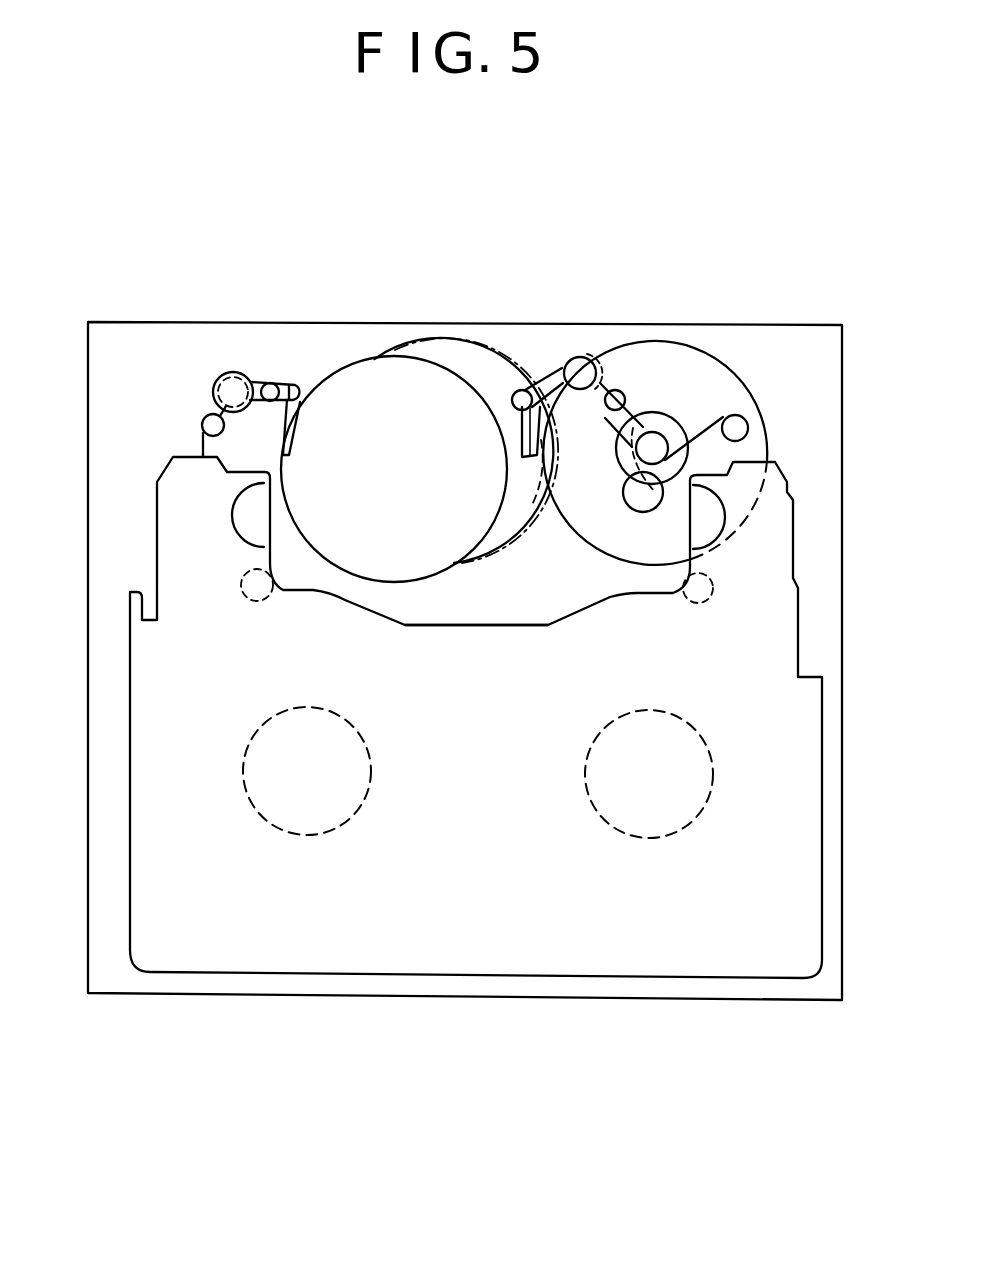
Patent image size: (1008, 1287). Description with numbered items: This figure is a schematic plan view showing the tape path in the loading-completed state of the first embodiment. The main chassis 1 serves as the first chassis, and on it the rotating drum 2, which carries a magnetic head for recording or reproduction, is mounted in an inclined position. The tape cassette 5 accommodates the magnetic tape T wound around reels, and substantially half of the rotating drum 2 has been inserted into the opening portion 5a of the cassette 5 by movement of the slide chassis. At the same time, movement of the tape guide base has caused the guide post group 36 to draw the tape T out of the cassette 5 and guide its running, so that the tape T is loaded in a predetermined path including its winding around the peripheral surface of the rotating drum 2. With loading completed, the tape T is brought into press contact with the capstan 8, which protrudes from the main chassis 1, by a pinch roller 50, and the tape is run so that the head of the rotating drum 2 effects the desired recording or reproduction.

The main chassis 1 is at (829, 377).
The rotating drum 2 is at (380, 383).
The tape cassette 5 is at (653, 958).
The opening portion 5a is at (484, 616).
The capstan 8 is at (653, 446).
The guide post group 36 is at (229, 372).
The pinch roller 50 is at (640, 503).
The magnetic tape T is at (258, 380).